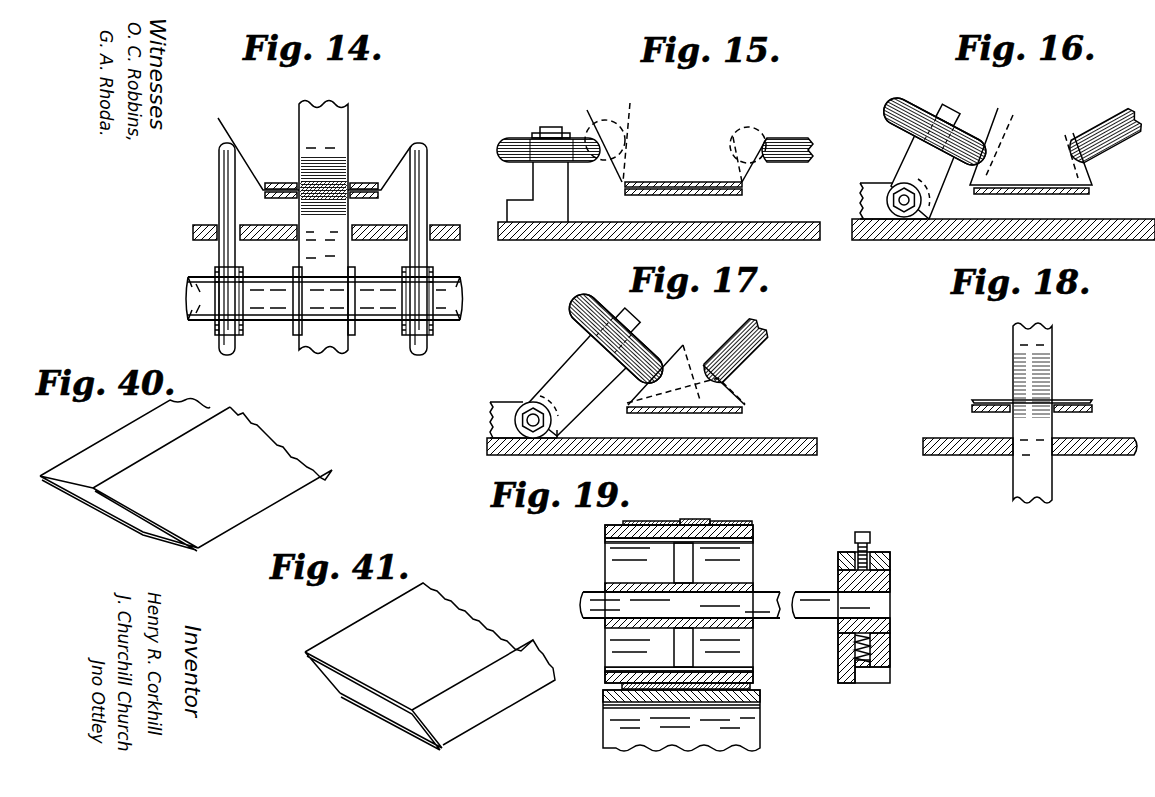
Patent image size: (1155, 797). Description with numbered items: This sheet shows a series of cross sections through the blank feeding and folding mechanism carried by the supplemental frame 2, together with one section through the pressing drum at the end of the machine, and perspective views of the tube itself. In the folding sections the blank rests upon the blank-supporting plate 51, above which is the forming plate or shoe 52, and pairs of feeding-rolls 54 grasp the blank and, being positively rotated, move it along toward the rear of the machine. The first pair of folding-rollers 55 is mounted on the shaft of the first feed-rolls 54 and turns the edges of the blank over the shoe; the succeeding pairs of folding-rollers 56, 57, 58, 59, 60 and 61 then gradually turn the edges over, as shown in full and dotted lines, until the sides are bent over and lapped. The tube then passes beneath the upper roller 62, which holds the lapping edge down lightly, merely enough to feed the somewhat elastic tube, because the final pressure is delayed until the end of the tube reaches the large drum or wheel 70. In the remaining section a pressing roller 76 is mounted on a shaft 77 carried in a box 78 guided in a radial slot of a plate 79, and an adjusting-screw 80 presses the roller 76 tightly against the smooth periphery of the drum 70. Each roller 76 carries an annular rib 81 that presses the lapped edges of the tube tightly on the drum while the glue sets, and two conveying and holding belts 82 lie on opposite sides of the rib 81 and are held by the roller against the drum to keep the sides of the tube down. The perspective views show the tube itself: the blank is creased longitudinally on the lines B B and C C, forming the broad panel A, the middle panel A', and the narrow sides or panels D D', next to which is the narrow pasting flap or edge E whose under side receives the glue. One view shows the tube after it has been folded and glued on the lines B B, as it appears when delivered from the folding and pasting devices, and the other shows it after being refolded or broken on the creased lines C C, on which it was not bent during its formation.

In FIG. 14, the supplemental frame 2 is at (326, 223).
In FIG. 15, the supplemental frame 2 is at (659, 224).
In FIG. 16, the supplemental frame 2 is at (1003, 222).
In FIG. 17, the supplemental frame 2 is at (652, 439).
In FIG. 18, the supplemental frame 2 is at (1030, 438).
In FIG. 14, the blank-supporting plate 51 is at (267, 199).
In FIG. 15, the blank-supporting plate 51 is at (680, 195).
In FIG. 16, the blank-supporting plate 51 is at (1031, 199).
In FIG. 17, the blank-supporting plate 51 is at (684, 417).
In FIG. 18, the blank-supporting plate 51 is at (1032, 415).
In FIG. 14, the forming plate or shoe 52 is at (269, 184).
In FIG. 15, the forming plate or shoe 52 is at (683, 176).
In FIG. 14, the feeding-rolls 54 is at (323, 227).
In FIG. 14, the first pair of folding-rollers 55 is at (219, 258).
In FIG. 15, the folding-rollers 56 is at (515, 141).
In FIG. 15, the folding-rollers 57 is at (612, 140).
In FIG. 16, the folding-rollers 58 is at (1011, 125).
In FIG. 16, the folding-rollers 59 is at (968, 130).
In FIG. 17, the folding-rollers 60 is at (769, 353).
In FIG. 17, the folding-rollers 61 is at (652, 356).
In FIG. 18, the upper roller 62 is at (1044, 343).
In FIG. 19, the large drum or wheel 70 is at (760, 720).
In FIG. 19, the pressing rollers 76 is at (753, 638).
In FIG. 19, the roller shafts 77 is at (766, 592).
In FIG. 19, the boxes 78 is at (890, 583).
In FIG. 19, the plates 79 is at (854, 676).
In FIG. 19, the adjusting-screws 80 is at (865, 543).
In FIG. 19, the annular rib 81 is at (697, 520).
In FIG. 19, the conveying and holding belts 82 is at (687, 597).
In FIG. 40, the broad panel A is at (119, 513).
In FIG. 41, the broad panel A is at (373, 701).
In FIG. 40, the middle panel A' is at (212, 477).
In FIG. 41, the middle panel A' is at (419, 646).
In FIG. 40, the creased lines B B is at (97, 445).
In FIG. 41, the creased lines B B is at (478, 676).
In FIG. 40, the creased lines C C is at (152, 551).
In FIG. 41, the creased lines C C is at (358, 622).
In FIG. 40, the narrow side panel D is at (135, 444).
In FIG. 41, the narrow side panel D is at (312, 675).
In FIG. 40, the narrow side panel D' is at (189, 557).
In FIG. 41, the narrow side panel D' is at (483, 692).
In FIG. 40, the pasting flap or edge E is at (142, 533).
In FIG. 41, the pasting flap or edge E is at (429, 745).